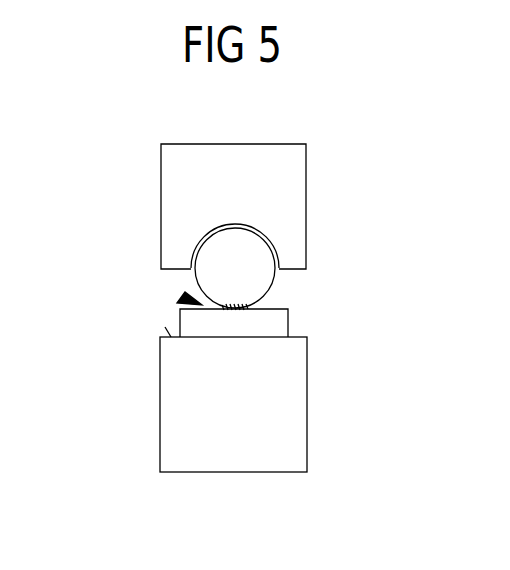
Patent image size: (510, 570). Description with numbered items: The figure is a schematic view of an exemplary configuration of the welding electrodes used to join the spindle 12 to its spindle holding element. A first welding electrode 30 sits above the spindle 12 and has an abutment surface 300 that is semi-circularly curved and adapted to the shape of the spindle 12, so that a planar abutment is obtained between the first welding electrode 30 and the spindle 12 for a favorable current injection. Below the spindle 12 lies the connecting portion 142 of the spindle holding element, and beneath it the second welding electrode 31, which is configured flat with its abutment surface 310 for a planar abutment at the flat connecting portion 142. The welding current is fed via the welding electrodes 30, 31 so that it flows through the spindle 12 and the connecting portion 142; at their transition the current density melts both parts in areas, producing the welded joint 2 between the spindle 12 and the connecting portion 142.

The welding electrode 30 is at (182, 208).
The abutment surface 300 is at (243, 242).
The spindle 12 is at (274, 281).
The welded joint 2 is at (178, 298).
The connecting portion 142 is at (280, 322).
The abutment surface 310 is at (165, 327).
The welding electrode 31 is at (173, 420).